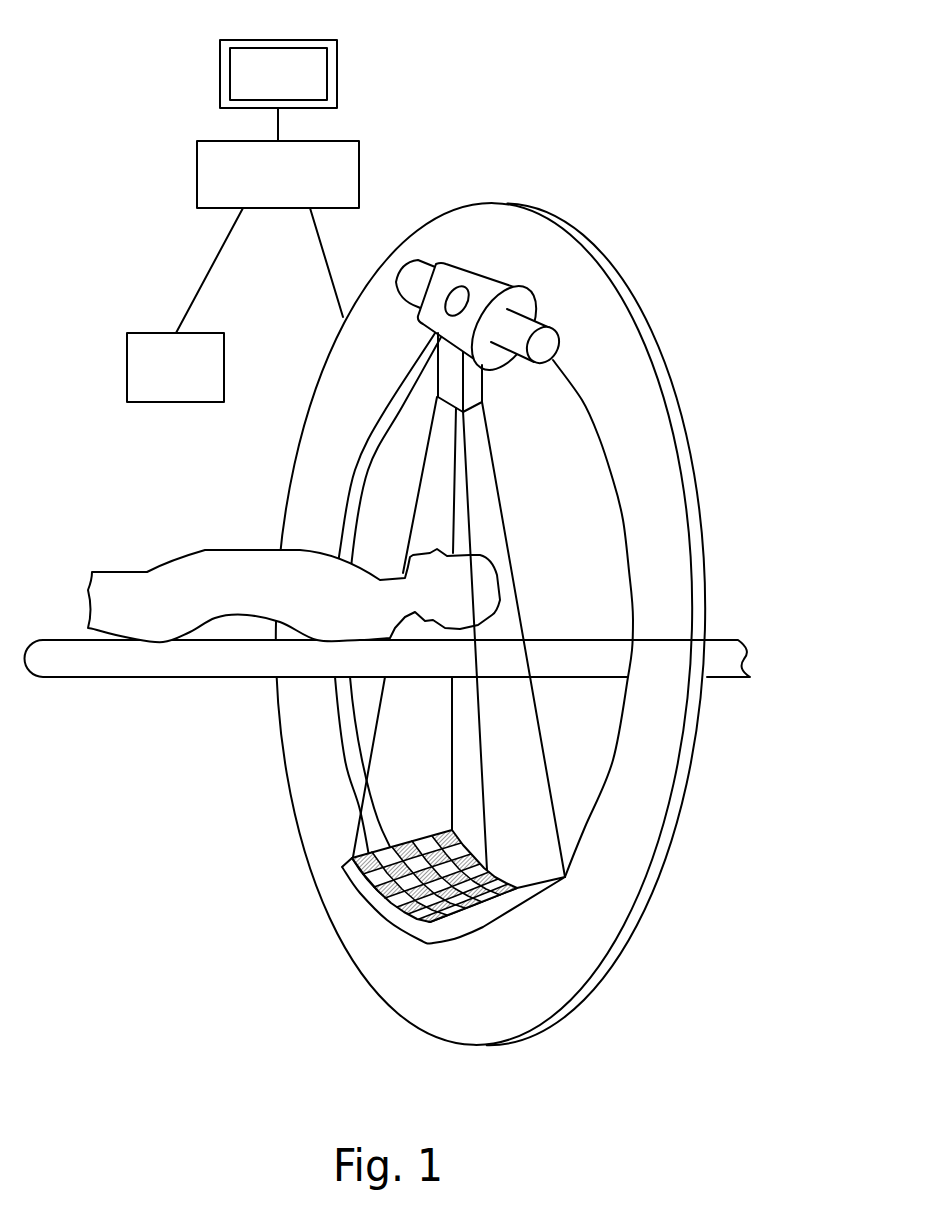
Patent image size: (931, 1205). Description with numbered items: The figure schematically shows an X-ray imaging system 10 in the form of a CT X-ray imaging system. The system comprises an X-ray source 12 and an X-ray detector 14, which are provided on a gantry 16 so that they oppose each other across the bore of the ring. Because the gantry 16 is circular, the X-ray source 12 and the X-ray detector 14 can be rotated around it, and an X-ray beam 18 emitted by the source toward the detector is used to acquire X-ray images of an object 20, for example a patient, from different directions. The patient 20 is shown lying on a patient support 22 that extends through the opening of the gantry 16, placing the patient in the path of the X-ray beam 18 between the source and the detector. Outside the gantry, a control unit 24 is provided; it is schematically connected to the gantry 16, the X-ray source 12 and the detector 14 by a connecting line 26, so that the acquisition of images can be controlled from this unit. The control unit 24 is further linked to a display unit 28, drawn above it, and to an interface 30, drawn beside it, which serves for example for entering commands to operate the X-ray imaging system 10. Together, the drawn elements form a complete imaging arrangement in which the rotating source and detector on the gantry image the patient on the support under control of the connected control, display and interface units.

The X-ray imaging system 10 is at (703, 308).
The X-ray source 12 is at (480, 280).
The X-ray detector 14 is at (378, 903).
The gantry 16 is at (692, 503).
The X-ray beam 18 is at (543, 743).
The object 20 is at (110, 572).
The patient support 22 is at (78, 679).
The control unit 24 is at (360, 173).
The connecting line 26 is at (335, 277).
The display unit 28 is at (338, 75).
The interface 30 is at (127, 366).